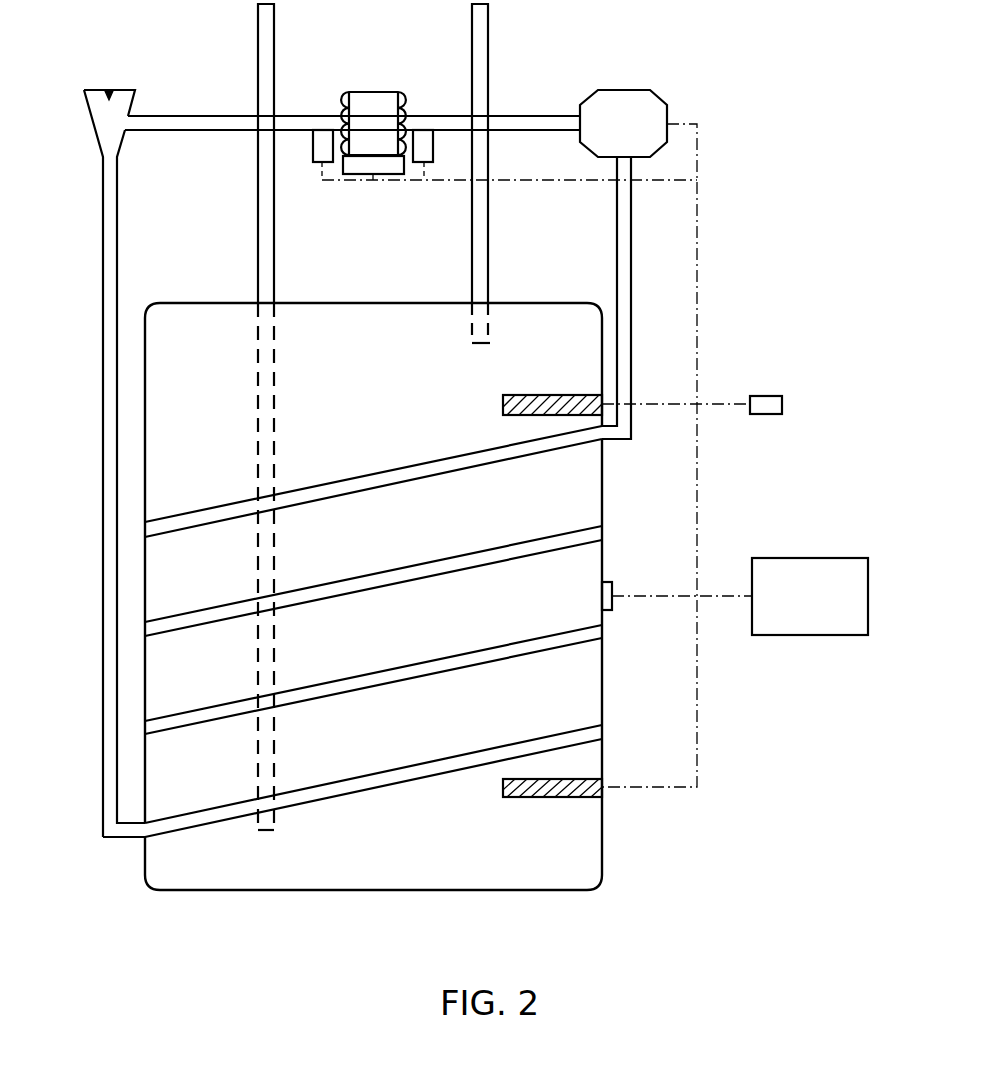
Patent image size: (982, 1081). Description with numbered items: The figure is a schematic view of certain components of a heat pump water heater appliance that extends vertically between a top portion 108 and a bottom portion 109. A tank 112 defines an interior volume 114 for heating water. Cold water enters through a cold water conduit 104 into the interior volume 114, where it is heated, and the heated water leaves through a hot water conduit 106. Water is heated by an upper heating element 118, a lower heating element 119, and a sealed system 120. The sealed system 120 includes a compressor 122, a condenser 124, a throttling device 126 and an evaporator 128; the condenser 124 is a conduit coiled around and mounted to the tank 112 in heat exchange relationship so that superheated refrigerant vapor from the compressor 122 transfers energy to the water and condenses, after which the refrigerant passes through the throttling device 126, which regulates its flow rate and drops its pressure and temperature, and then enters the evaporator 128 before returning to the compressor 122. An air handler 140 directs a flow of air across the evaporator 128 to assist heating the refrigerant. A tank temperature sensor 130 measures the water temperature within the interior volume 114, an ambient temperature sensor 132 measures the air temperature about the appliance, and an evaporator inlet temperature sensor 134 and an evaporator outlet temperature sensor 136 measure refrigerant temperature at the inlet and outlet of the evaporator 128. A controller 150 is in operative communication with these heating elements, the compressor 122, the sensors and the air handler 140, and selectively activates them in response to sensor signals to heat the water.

The cold water conduit 104 is at (258, 60).
The hot water conduit 106 is at (472, 60).
The top portion 108 is at (143, 303).
The bottom portion 109 is at (145, 891).
The tank 112 is at (604, 505).
The interior volume 114 is at (348, 360).
The upper heating element 118 is at (503, 400).
The lower heating element 119 is at (503, 788).
The sealed system 120 is at (667, 73).
The compressor 122 is at (583, 99).
The condenser 124 is at (383, 489).
The throttling device 126 is at (136, 98).
The evaporator 128 is at (367, 92).
The tank temperature sensor 130 is at (612, 584).
The ambient temperature sensor 132 is at (770, 396).
The evaporator inlet temperature sensor 134 is at (316, 162).
The evaporator outlet temperature sensor 136 is at (432, 162).
The air handler 140 is at (368, 175).
The controller 150 is at (810, 596).